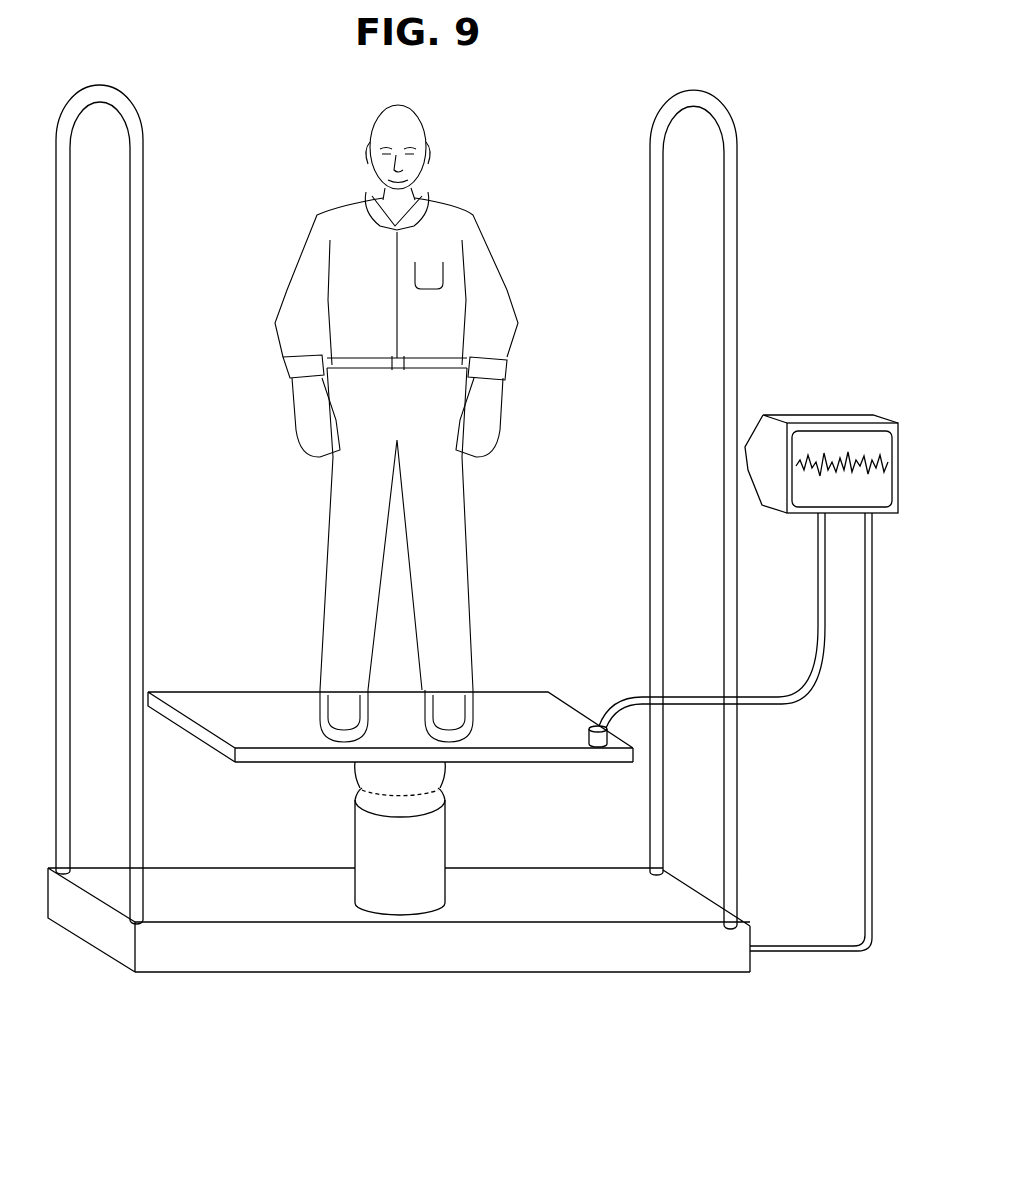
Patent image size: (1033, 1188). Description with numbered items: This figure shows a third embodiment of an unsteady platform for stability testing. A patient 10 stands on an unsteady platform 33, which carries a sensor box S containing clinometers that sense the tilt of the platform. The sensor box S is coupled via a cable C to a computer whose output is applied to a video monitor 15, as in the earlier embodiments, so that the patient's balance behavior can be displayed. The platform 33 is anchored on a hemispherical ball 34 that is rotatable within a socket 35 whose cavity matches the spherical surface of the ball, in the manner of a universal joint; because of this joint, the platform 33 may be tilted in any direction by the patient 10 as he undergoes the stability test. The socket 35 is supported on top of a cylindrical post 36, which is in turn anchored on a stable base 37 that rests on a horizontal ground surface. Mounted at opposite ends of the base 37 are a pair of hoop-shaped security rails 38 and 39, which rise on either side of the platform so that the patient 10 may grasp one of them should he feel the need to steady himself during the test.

The patient 10 is at (467, 198).
The video monitor 15 is at (830, 417).
The unsteady platform 33 is at (240, 692).
The hemispherical ball 34 is at (432, 773).
The socket 35 is at (357, 800).
The pedestal cylinder 36 is at (432, 845).
The stable base 37 is at (507, 968).
The hoop-shaped security rail 38 is at (92, 90).
The hoop-shaped security rail 39 is at (690, 100).
The cable C is at (698, 700).
The sensor box S is at (596, 726).